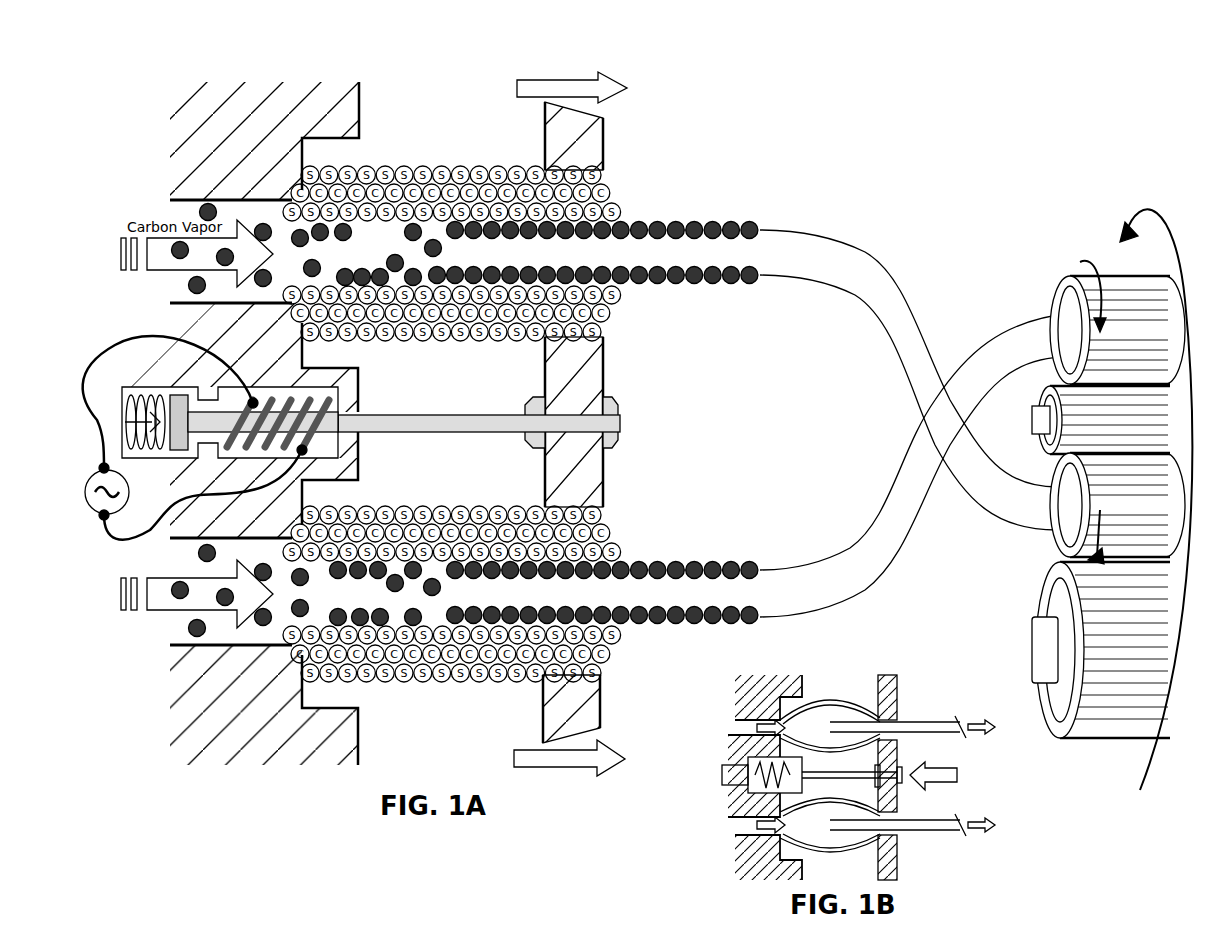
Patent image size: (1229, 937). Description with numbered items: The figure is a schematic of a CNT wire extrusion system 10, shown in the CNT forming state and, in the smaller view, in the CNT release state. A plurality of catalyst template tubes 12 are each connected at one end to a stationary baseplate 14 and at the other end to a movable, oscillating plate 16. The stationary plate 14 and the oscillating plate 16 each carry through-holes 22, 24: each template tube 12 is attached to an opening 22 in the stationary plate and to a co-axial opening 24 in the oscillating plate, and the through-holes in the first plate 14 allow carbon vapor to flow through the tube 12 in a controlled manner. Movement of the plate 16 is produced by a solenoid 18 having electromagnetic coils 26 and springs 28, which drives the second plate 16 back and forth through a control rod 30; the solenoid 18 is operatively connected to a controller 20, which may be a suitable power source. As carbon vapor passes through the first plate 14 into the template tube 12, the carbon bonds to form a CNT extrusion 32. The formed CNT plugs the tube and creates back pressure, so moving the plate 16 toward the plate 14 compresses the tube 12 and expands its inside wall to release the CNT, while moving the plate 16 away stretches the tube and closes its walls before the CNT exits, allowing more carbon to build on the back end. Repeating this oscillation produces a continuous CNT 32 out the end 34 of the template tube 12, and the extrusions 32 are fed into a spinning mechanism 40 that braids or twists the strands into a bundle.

In FIG. 1A, the system 10 is at (444, 80).
In FIG. 1A, the catalyst tube 12 is at (447, 162).
In FIG. 1B, the catalyst tube 12 is at (835, 700).
In FIG. 1A, the stationary baseplate 14 is at (328, 122).
In FIG. 1B, the stationary baseplate 14 is at (790, 680).
In FIG. 1A, the movable plate 16 is at (587, 143).
In FIG. 1B, the movable plate 16 is at (890, 702).
In FIG. 1A, the solenoid 18 is at (330, 452).
In FIG. 1A, the controller 20 is at (104, 500).
In FIG. 1A, the through-hole 22 is at (260, 305).
In FIG. 1A, the through-hole 24 is at (592, 340).
In FIG. 1A, the electromagnetic coil 26 is at (340, 415).
In FIG. 1A, the spring 28 is at (130, 396).
In FIG. 1A, the control rod 30 is at (457, 422).
In FIG. 1A, the CNT extrusion 32 is at (818, 252).
In FIG. 1B, the CNT extrusion 32 is at (935, 723).
In FIG. 1A, the end of catalyst template tube 34 is at (620, 207).
In FIG. 1A, the spinning mechanism 40 is at (1045, 255).